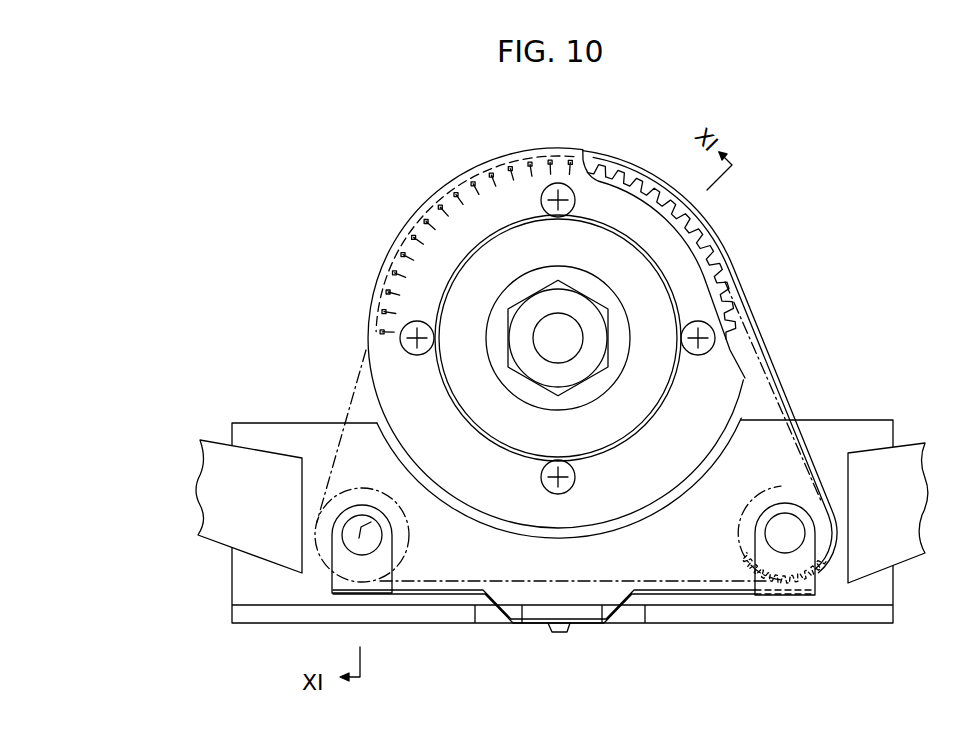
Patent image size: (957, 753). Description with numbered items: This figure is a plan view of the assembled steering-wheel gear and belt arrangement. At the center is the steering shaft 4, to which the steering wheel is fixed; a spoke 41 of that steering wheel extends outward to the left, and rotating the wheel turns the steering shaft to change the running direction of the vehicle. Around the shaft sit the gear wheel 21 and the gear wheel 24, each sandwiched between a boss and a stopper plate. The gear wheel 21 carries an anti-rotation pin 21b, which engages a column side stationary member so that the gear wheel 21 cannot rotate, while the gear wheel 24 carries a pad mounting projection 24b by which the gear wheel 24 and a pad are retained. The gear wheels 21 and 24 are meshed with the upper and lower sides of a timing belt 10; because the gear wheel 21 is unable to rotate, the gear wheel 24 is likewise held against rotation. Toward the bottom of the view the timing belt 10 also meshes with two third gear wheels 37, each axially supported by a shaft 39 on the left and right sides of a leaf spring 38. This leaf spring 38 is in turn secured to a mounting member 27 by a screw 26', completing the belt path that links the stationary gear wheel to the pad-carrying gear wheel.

The steering shaft 4 is at (566, 333).
The timing belt 10 is at (717, 242).
The gear wheel 21 is at (606, 331).
The gear wheel 24 is at (642, 180).
The anti-rotation pin 21b is at (476, 235).
The pad mounting projection 24b is at (472, 181).
The screw 26' is at (583, 646).
The mounting member 27 is at (882, 612).
The third gear wheel 37 is at (745, 532).
The leaf spring 38 is at (450, 597).
The shaft 39 is at (784, 528).
The spoke 41 is at (221, 450).